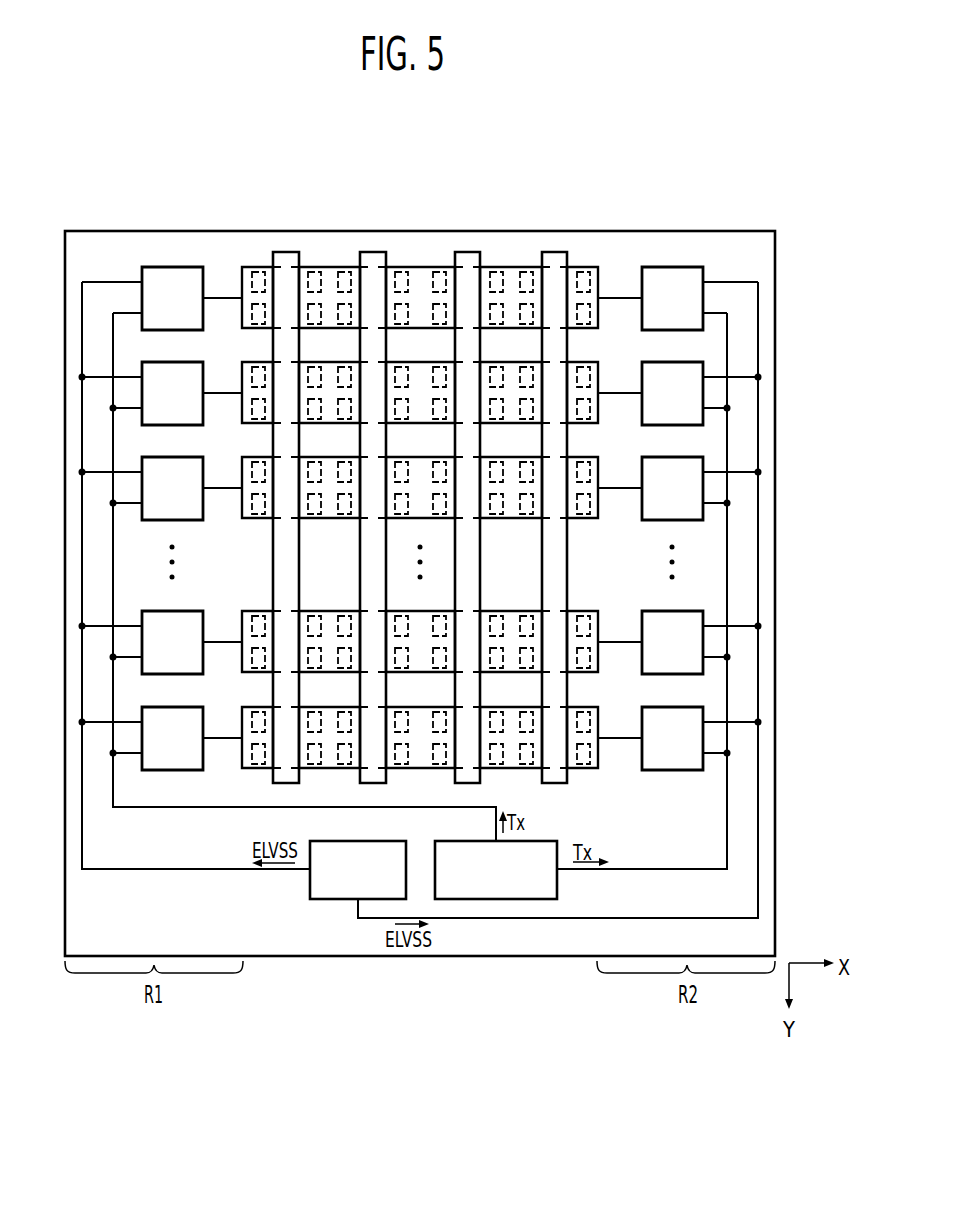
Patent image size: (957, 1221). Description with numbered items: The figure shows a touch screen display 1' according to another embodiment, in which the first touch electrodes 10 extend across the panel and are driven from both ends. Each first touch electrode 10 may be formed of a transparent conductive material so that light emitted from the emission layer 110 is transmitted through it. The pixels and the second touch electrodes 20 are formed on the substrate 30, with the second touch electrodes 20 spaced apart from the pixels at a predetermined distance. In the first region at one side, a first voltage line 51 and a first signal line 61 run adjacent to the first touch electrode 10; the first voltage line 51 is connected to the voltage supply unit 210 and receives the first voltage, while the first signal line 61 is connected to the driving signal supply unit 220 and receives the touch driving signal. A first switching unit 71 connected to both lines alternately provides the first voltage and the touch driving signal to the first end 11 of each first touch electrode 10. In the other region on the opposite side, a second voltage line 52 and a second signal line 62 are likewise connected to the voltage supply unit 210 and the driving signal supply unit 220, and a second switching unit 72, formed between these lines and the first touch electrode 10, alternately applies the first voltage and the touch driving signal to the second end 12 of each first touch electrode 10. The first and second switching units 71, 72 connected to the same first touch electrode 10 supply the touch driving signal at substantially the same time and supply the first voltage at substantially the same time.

The touch screen display 1' is at (420, 548).
The first touch electrode 10 is at (327, 267).
The first end 11 is at (242, 282).
The second end 12 is at (600, 278).
The emission layer 110 is at (495, 270).
The second touch electrode 20 is at (553, 252).
The substrate 30 is at (403, 231).
The first voltage line 51 is at (82, 556).
The second voltage line 52 is at (758, 556).
The first signal line 61 is at (113, 598).
The second signal line 62 is at (727, 598).
The first switching unit 71 is at (173, 267).
The second switching unit 72 is at (672, 267).
The voltage supply unit 210 is at (310, 892).
The driving signal supply unit 220 is at (557, 892).